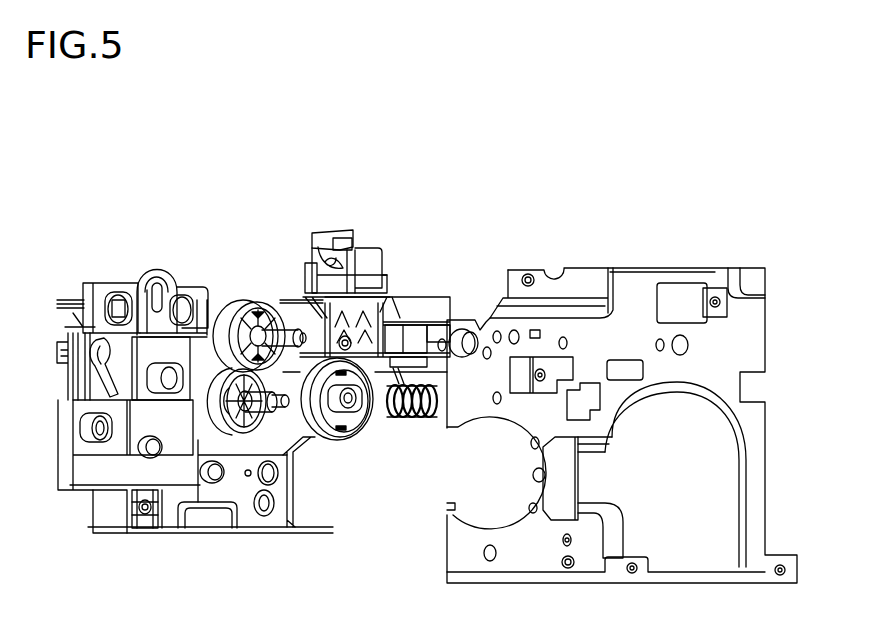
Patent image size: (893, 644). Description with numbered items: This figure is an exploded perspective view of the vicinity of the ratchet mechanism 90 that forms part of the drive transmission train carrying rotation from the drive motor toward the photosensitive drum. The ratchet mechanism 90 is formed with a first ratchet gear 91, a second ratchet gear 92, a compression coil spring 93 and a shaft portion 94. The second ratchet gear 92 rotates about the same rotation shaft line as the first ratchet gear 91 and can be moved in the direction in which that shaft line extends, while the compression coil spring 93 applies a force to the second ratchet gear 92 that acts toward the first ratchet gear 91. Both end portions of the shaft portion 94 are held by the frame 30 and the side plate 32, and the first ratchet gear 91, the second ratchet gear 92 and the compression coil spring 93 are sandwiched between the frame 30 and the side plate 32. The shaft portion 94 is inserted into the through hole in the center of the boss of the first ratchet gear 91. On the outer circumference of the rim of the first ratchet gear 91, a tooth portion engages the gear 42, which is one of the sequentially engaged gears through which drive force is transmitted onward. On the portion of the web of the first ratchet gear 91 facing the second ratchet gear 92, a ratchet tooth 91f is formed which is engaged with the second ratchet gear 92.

The frame 30 is at (372, 262).
The side plate 32 is at (636, 292).
The gear 42 is at (226, 300).
The ratchet mechanism 90 is at (293, 492).
The first ratchet gear 91 is at (268, 414).
The ratchet tooth 91f is at (221, 405).
The second ratchet gear 92 is at (346, 440).
The compression coil spring 93 is at (412, 419).
The shaft portion 94 is at (290, 455).